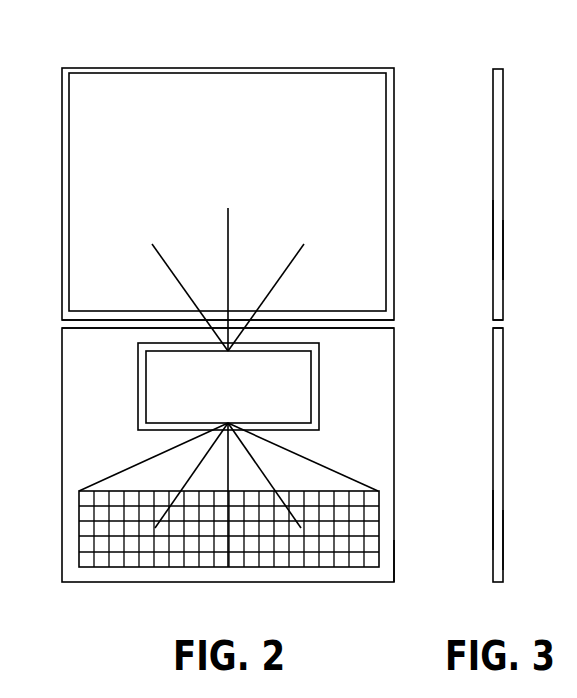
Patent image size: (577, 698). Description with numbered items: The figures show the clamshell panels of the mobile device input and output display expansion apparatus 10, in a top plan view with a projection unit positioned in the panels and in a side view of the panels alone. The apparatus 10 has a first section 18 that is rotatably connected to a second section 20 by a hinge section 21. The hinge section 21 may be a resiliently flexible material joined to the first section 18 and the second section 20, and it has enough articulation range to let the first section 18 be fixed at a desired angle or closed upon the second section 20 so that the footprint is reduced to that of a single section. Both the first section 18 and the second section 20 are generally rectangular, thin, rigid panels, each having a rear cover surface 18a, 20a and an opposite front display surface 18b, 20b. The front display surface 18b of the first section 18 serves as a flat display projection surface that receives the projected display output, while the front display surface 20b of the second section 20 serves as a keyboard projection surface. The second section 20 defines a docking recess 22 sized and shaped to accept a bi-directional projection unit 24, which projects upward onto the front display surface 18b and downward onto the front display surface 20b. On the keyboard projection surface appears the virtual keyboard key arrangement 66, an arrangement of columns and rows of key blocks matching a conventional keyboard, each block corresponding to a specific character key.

In FIG. 2, the mobile device input and output display expansion apparatus 10 is at (231, 309).
In FIG. 3, the mobile device input and output display expansion apparatus 10 is at (502, 310).
In FIG. 2, the first section 18 is at (204, 194).
In FIG. 3, the first section 18 is at (493, 181).
In FIG. 3, the rear cover surface 18a is at (493, 233).
In FIG. 2, the front display surface 18b is at (246, 168).
In FIG. 3, the front display surface 18b is at (503, 250).
In FIG. 2, the second section 20 is at (75, 366).
In FIG. 3, the second section 20 is at (493, 393).
In FIG. 3, the rear cover surface 20a is at (493, 520).
In FIG. 2, the front display surface 20b is at (387, 562).
In FIG. 3, the front display surface 20b is at (503, 542).
In FIG. 2, the hinge section 21 is at (378, 324).
In FIG. 3, the hinge section 21 is at (496, 325).
In FIG. 2, the docking recess 22 is at (221, 387).
In FIG. 2, the bi-directional projection unit 24 is at (155, 391).
In FIG. 2, the virtual keyboard key arrangement 66 is at (222, 560).